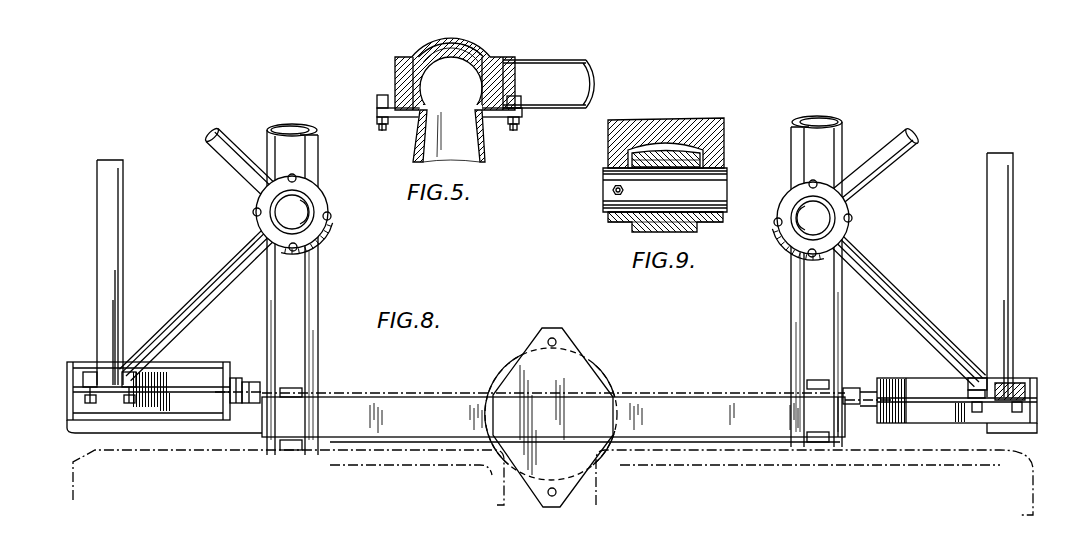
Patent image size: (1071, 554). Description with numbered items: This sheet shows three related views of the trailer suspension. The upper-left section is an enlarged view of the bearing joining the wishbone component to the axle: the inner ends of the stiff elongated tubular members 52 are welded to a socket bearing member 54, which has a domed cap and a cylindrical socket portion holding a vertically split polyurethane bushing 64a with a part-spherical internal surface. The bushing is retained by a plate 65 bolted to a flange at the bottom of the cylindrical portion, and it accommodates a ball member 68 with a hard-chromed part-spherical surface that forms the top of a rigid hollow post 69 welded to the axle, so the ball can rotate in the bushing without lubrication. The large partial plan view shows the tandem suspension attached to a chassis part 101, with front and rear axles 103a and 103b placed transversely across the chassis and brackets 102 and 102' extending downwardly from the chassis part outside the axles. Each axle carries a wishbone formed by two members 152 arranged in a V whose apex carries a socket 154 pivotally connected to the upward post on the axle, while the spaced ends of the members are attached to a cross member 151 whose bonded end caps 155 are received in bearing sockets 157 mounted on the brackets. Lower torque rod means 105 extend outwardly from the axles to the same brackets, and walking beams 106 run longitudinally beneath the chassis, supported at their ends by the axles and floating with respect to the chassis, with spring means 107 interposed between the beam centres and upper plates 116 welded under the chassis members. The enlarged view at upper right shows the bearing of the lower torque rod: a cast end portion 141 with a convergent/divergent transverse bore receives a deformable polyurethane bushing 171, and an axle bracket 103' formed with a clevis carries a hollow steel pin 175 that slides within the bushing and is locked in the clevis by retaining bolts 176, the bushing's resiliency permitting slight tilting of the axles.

In FIG. 5, the stiff elongated members 52 is at (547, 70).
In FIG. 5, the socket bearing member 54 is at (488, 45).
In FIG. 5, the polyurethane bushing 64a is at (405, 62).
In FIG. 5, the plate 65 is at (512, 117).
In FIG. 5, the ball member 68 is at (450, 47).
In FIG. 5, the rigid hollow post 69 is at (418, 140).
In FIG. 8, the chassis part 101 is at (392, 440).
In FIG. 8, the brackets 102 is at (487, 395).
In FIG. 8, the housing 102' is at (957, 414).
In FIG. 8, the front tandem axle 103a is at (297, 373).
In FIG. 8, the rear tandem axle 103b is at (802, 312).
In FIG. 9, the axle bracket 103' is at (680, 126).
In FIG. 8, the lower torque rod means 105 is at (240, 380).
In FIG. 8, the walking beams 106 is at (652, 405).
In FIG. 8, the spring means 107 is at (598, 380).
In FIG. 8, the upper plates 116 is at (573, 352).
In FIG. 9, the cast end portion 141 is at (640, 232).
In FIG. 8, the cross member 151 is at (990, 212).
In FIG. 8, the members 152 is at (907, 150).
In FIG. 8, the socket 154 is at (850, 222).
In FIG. 8, the end caps 155 is at (1023, 383).
In FIG. 8, the bearing sockets 157 is at (93, 377).
In FIG. 9, the polyurethane bushing 171 is at (615, 224).
In FIG. 9, the hollow steel pin 175 is at (605, 171).
In FIG. 9, the retaining bolts 176 is at (612, 191).